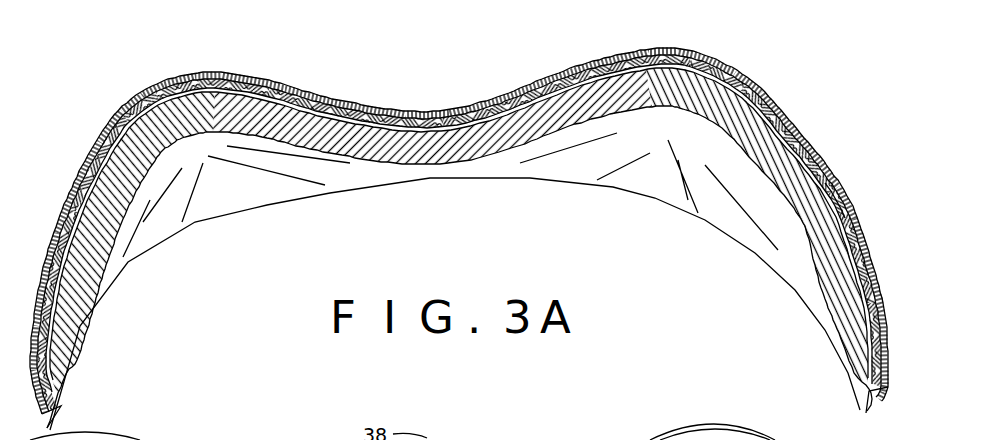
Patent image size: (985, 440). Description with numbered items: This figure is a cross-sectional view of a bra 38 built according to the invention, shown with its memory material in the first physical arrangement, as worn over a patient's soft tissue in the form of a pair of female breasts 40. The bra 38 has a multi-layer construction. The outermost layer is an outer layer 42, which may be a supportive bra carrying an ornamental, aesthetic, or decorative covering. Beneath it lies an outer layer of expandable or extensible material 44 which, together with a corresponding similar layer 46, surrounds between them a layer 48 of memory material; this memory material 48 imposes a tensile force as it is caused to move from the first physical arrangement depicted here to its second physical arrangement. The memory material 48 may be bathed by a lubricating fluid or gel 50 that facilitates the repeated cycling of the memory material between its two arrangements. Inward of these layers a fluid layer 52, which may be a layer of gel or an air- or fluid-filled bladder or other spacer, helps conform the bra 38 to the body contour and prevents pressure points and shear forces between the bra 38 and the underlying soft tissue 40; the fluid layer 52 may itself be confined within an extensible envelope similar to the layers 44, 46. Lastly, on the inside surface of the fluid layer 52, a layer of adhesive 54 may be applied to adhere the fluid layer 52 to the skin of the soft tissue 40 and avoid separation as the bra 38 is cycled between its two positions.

The bra 38 is at (381, 80).
The breasts 40 is at (220, 190).
The outer layer 42 is at (762, 97).
The outer layer of expandable or extensible material 44 is at (788, 127).
The layer of extensible material 46 is at (848, 208).
The layer of memory material 48 is at (812, 162).
The lubricating fluid or gel 50 is at (830, 177).
The fluid layer 52 is at (858, 230).
The layer of adhesive 54 is at (812, 287).